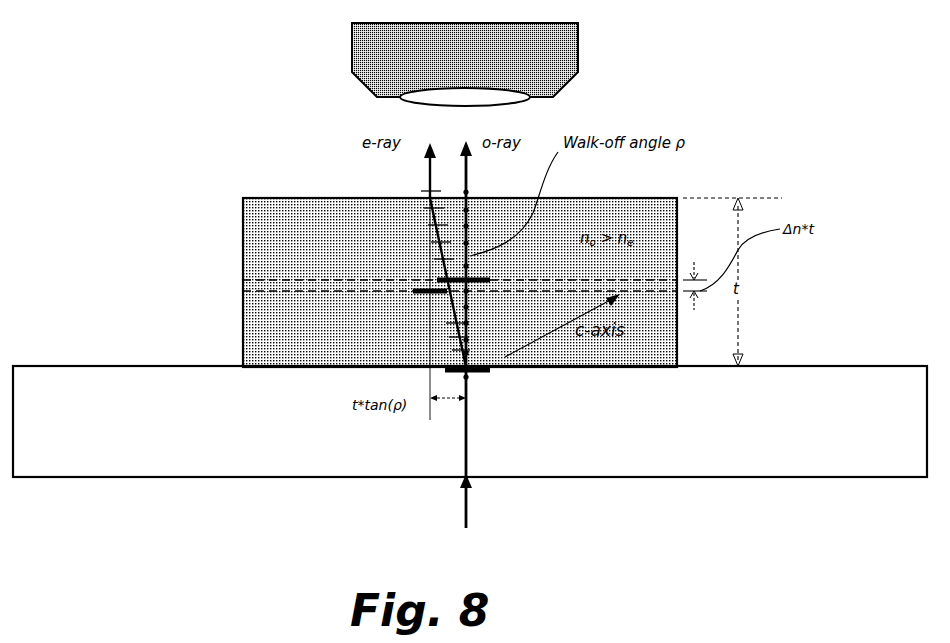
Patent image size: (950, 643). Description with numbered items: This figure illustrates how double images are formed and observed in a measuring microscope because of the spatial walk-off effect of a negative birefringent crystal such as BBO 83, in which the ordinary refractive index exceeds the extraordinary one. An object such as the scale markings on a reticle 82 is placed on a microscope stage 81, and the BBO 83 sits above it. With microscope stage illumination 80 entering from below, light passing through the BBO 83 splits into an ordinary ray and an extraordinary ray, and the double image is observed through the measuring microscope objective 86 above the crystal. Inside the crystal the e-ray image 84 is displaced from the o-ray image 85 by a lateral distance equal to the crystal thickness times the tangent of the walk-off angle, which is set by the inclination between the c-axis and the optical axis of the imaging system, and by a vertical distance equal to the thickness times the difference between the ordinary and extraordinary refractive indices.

The microscope stage illumination 80 is at (462, 486).
The microscope stage 81 is at (120, 457).
The reticle 82 is at (488, 372).
The BBO 83 is at (281, 337).
The e-ray image 84 is at (403, 292).
The o-ray image 85 is at (515, 279).
The measuring microscope objective 86 is at (567, 43).